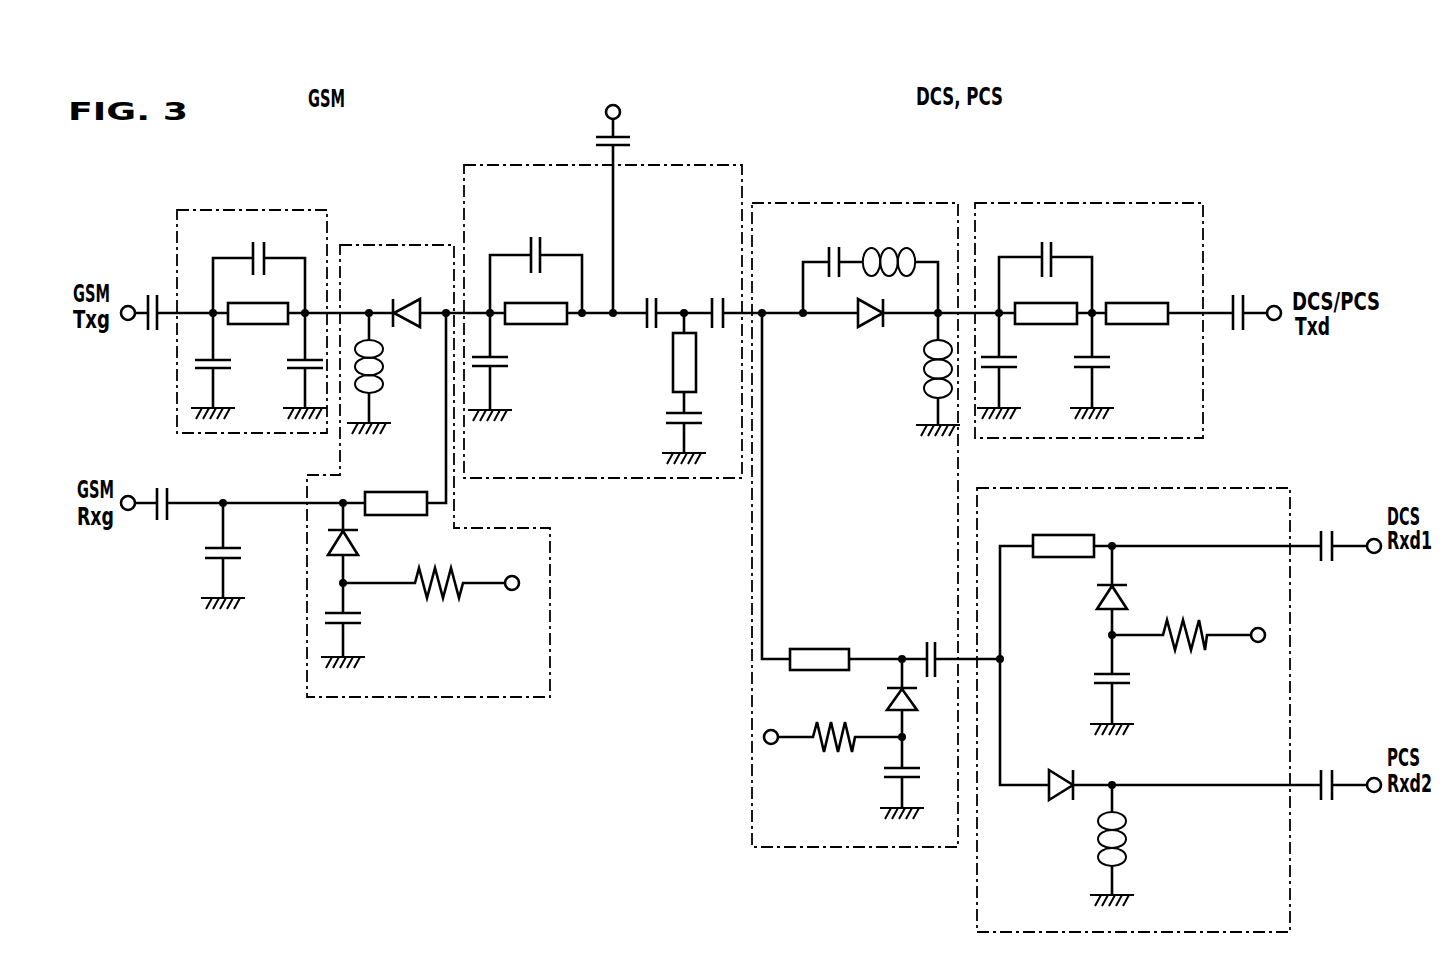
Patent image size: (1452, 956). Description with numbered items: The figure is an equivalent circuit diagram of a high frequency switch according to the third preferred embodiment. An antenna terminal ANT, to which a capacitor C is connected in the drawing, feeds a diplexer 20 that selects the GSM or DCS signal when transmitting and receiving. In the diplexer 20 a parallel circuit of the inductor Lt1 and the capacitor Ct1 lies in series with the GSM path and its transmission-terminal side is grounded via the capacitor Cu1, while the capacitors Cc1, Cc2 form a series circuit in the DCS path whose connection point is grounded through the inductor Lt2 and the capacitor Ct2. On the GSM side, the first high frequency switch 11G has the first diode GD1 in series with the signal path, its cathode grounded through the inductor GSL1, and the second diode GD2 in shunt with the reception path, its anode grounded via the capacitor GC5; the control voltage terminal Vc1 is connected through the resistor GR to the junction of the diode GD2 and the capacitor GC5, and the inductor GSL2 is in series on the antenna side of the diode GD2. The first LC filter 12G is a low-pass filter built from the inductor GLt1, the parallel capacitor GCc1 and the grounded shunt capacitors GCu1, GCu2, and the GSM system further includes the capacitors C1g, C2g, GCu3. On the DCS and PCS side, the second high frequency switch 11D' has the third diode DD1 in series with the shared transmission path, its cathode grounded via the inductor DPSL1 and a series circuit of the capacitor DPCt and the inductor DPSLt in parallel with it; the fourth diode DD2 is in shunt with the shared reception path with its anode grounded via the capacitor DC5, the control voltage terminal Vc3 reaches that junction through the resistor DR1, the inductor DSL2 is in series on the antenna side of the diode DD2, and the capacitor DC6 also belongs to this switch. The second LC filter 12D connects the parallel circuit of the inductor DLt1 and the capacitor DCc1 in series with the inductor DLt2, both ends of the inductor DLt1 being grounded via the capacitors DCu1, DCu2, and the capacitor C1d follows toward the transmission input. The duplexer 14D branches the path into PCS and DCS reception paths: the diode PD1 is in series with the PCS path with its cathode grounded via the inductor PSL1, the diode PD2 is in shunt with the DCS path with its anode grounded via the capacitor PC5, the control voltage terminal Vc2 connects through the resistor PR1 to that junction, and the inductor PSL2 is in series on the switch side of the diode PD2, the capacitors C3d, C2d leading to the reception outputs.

The first LC filter 12G is at (273, 210).
The first high frequency switch 11G is at (383, 245).
The diplexer 20 is at (537, 165).
The second high frequency switch 11D' is at (855, 498).
The second LC filter 12D is at (1048, 203).
The duplexer 14D is at (1088, 488).
The antenna terminal ANT is at (612, 193).
The antenna capacitor C is at (621, 137).
The capacitor C1g is at (151, 298).
The capacitor GCc1 is at (259, 263).
The inductor GLt1 is at (255, 297).
The ground capacitor GCu2 is at (195, 366).
The ground capacitor GCu1 is at (286, 366).
The first diode GD1 is at (406, 327).
The inductor GSL1 is at (391, 373).
The capacitor Ct1 is at (536, 261).
The inductor Lt1 is at (536, 298).
The capacitor Cu1 is at (500, 367).
The capacitor Cc1 is at (653, 299).
The capacitor Cc2 is at (710, 299).
The inductor Lt2 is at (665, 352).
The capacitor Ct2 is at (666, 428).
The capacitor DPCt is at (833, 264).
The inductor DPSLt is at (900, 264).
The third diode DD1 is at (861, 328).
The inductor DPSL1 is at (906, 374).
The inductor DSL2 is at (844, 491).
The capacitor DC6 is at (956, 645).
The fourth diode DD2 is at (882, 698).
The resistor DR1 is at (840, 724).
The control voltage terminal Vc3 is at (750, 737).
The capacitor DC5 is at (885, 778).
The capacitor DCc1 is at (1045, 264).
The inductor DLt1 is at (1046, 299).
The inductor DLt2 is at (1137, 299).
The capacitor DCu1 is at (1017, 366).
The capacitor DCu2 is at (1110, 366).
The capacitor C1d is at (1240, 299).
The capacitor C2g is at (160, 488).
The capacitor GCu3 is at (199, 556).
The inductor GSL2 is at (396, 488).
The second diode GD2 is at (364, 543).
The resistor GR is at (424, 600).
The control voltage terminal Vc1 is at (511, 599).
The capacitor GC5 is at (360, 625).
The inductor PSL2 is at (1160, 580).
The diode PD2 is at (1090, 590).
The resistor PR1 is at (1181, 618).
The control voltage terminal Vc2 is at (1259, 617).
The capacitor PC5 is at (1093, 685).
The diode PD1 is at (1160, 729).
The inductor PSL1 is at (1089, 845).
The capacitor C3d is at (1337, 530).
The capacitor C2d is at (1337, 770).